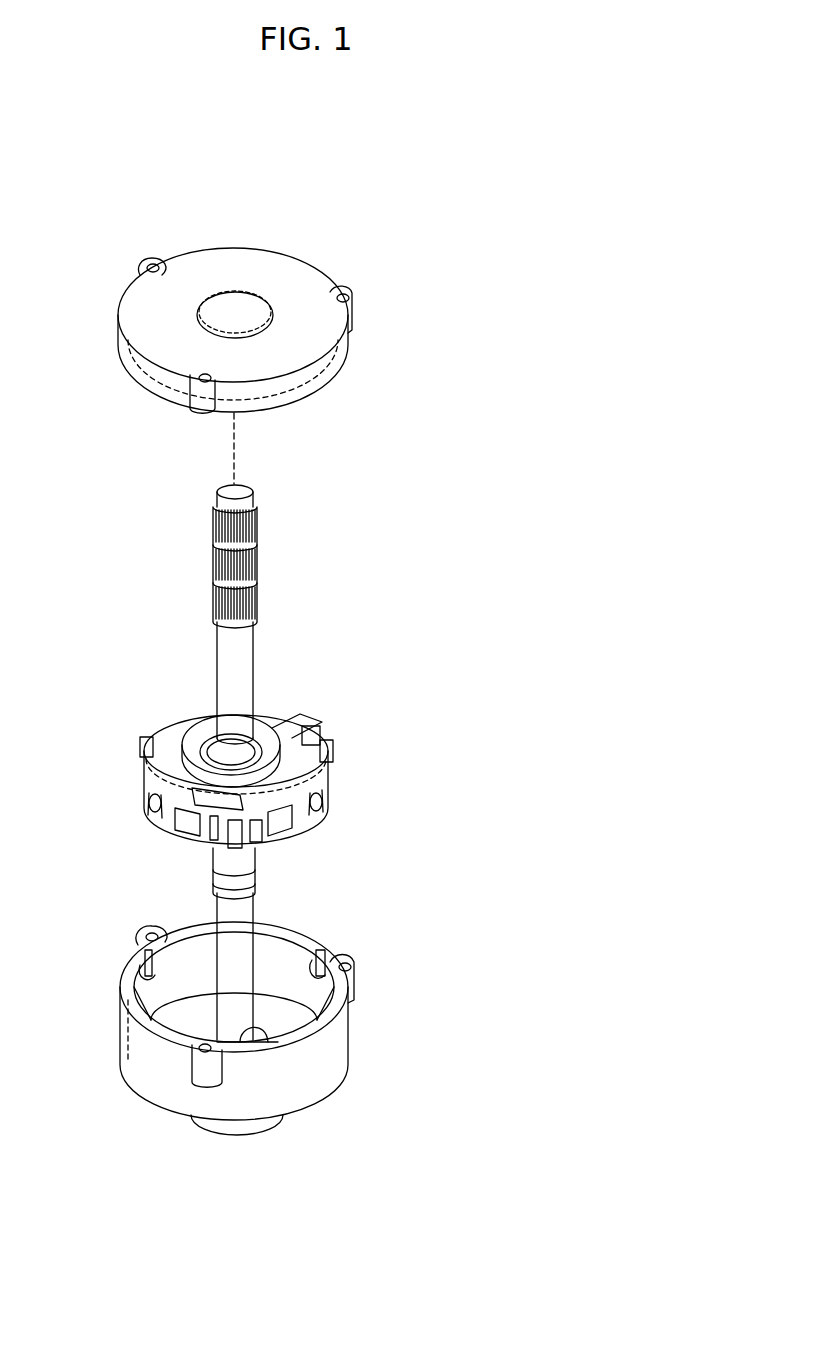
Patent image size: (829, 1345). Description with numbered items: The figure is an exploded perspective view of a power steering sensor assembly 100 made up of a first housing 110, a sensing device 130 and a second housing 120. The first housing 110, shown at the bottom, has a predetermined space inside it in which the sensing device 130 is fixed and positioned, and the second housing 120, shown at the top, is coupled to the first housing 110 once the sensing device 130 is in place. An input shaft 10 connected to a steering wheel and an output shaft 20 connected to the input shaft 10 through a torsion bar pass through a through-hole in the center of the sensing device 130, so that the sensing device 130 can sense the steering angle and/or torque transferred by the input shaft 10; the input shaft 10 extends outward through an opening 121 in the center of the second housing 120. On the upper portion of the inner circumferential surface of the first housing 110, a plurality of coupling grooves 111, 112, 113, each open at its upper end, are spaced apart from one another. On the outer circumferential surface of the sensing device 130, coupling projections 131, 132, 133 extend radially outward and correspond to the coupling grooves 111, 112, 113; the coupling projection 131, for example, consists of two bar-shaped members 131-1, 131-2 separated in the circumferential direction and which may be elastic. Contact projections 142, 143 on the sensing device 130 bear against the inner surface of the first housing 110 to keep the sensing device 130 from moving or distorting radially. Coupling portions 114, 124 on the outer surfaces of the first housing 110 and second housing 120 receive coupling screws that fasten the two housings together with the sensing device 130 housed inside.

The power steering sensor assembly 100 is at (494, 412).
The first housing 110 is at (372, 1041).
The coupling groove 111 is at (320, 946).
The coupling groove 112 is at (145, 968).
The coupling groove 113 is at (270, 1020).
The coupling portion 114 is at (150, 932).
The second housing 120 is at (285, 236).
The opening 121 is at (231, 320).
The coupling portion 124 is at (148, 265).
The sensing device 130 is at (173, 686).
The coupling projection 131 is at (340, 736).
The bar-shaped member 131-1 is at (310, 727).
The bar-shaped member 131-2 is at (334, 752).
The coupling projection 132 is at (138, 744).
The coupling projection 133 is at (230, 846).
The contact projection 142 is at (146, 800).
The contact projection 143 is at (330, 808).
The input shaft 10 is at (260, 529).
The output shaft 20 is at (258, 880).